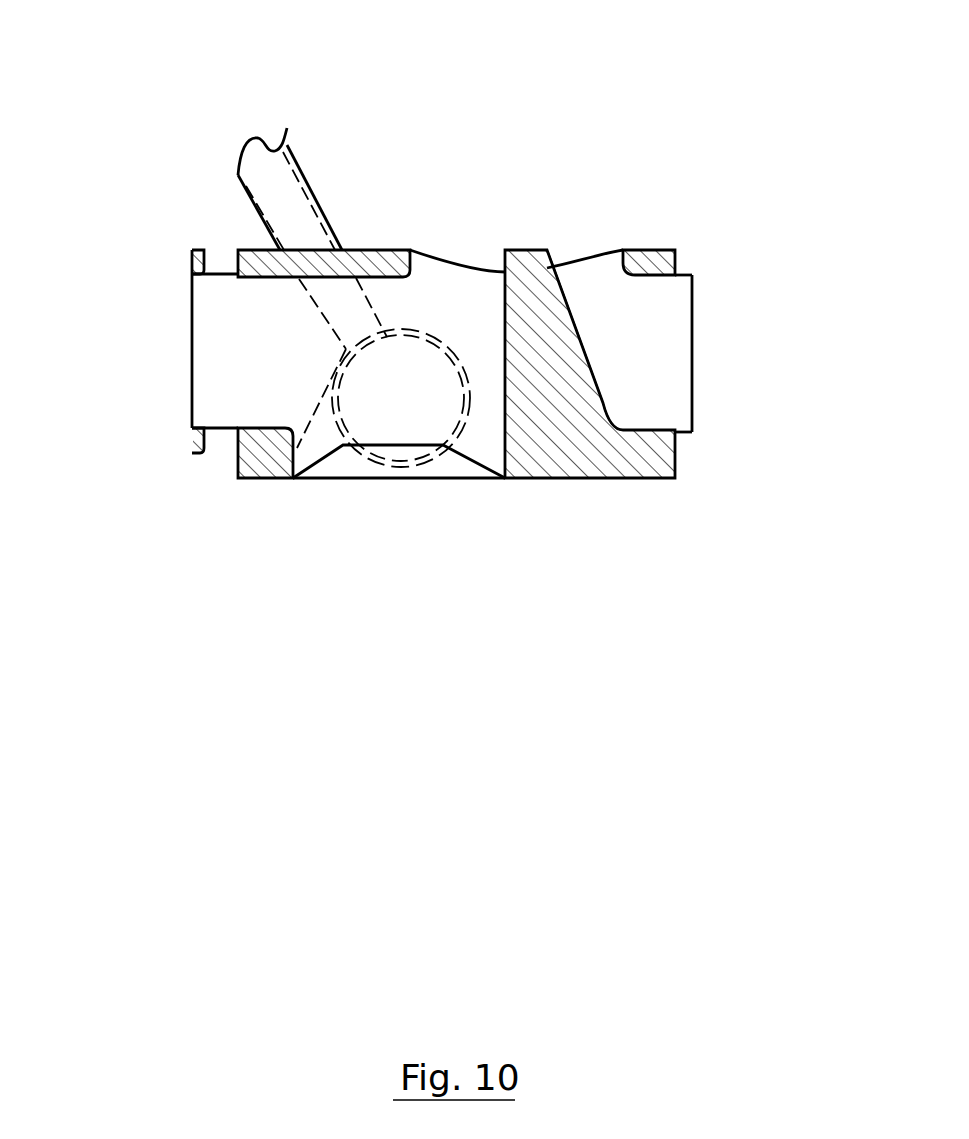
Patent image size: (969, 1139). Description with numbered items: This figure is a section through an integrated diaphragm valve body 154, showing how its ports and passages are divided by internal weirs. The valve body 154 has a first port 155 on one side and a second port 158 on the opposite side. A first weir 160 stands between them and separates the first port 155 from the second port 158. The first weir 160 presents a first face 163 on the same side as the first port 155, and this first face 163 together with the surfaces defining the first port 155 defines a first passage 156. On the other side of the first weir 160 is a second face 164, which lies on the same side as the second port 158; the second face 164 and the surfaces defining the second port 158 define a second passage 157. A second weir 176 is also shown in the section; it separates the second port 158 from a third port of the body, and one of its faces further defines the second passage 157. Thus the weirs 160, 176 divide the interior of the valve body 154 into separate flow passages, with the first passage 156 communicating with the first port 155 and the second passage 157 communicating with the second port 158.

The integrated diaphragm valve body 154 is at (578, 480).
The first port 155 is at (680, 432).
The first passage 156 is at (692, 273).
The second passage 157 is at (377, 278).
The second port 158 is at (192, 315).
The first weir 160 is at (605, 403).
The first face 163 is at (577, 338).
The second face 164 is at (505, 312).
The second weir 176 is at (478, 463).